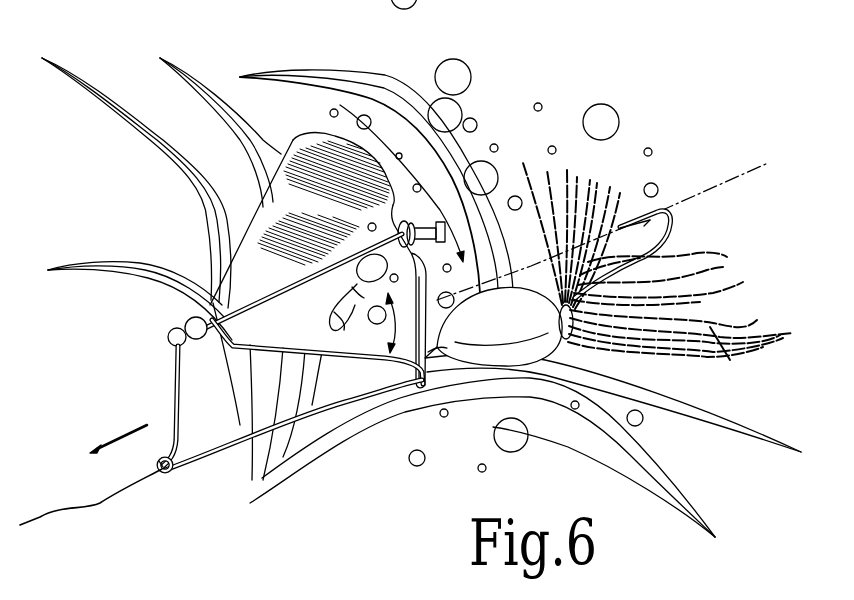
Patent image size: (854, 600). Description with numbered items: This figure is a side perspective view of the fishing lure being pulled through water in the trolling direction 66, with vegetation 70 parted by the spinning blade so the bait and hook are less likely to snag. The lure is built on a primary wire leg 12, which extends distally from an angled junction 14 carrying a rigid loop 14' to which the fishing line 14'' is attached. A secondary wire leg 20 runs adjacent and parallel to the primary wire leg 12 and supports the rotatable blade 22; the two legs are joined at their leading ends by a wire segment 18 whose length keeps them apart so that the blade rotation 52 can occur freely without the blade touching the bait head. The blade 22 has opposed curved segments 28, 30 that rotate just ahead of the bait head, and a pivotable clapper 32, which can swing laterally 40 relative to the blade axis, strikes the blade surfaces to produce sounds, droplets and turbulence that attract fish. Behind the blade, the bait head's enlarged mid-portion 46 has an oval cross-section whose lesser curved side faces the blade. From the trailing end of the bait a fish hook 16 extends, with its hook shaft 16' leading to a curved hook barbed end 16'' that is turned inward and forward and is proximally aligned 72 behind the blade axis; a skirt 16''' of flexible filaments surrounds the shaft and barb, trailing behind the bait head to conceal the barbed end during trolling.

The primary wire leg 12 is at (217, 457).
The angled junction 14 is at (187, 498).
The rigid loop 14' is at (131, 460).
The fishing line 14'' is at (91, 520).
The fish hook 16 is at (657, 252).
The fish hook shaft 16' is at (670, 273).
The hook barbed end 16'' is at (614, 231).
The skirt of flexible filaments 16''' is at (702, 365).
The wire segment 18 is at (160, 377).
The secondary wire leg 20 is at (237, 310).
The rotatable blade 22 is at (243, 214).
The curved segment 28 is at (311, 162).
The curved segment 30 is at (417, 382).
The clapper 32 is at (360, 278).
The lateral pivoting direction 40 is at (447, 352).
The enlarged mid-portion 46 is at (531, 327).
The blade rotation 52 is at (268, 78).
The trolling direction 66 is at (117, 437).
The weeds 70 is at (315, 62).
The proximal alignment 72 is at (501, 285).